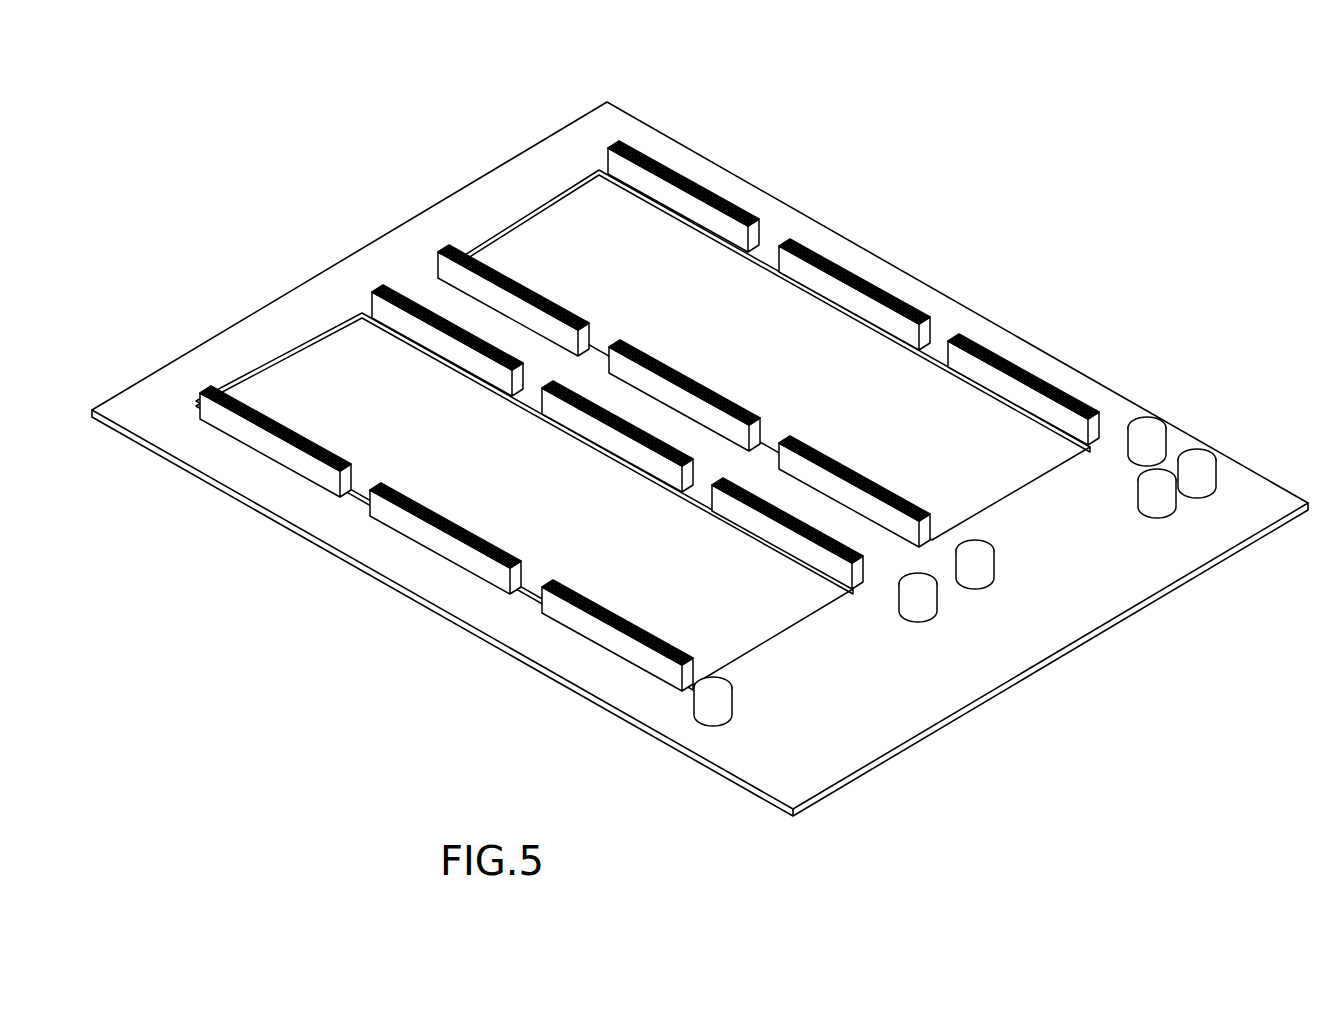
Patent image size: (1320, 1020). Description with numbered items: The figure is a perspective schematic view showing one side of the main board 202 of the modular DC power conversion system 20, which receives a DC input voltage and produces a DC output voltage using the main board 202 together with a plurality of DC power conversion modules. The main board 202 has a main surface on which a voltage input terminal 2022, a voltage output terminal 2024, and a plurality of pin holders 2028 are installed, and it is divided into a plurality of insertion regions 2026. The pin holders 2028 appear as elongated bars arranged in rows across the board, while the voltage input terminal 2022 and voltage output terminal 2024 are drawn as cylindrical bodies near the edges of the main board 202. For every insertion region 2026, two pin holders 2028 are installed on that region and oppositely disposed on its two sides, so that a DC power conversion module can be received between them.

The modular DC power conversion system 20 is at (701, 444).
The main board 202 is at (390, 252).
The voltage input terminal 2022 is at (1150, 427).
The voltage output terminal 2024 is at (1200, 454).
The insertion region 2026 is at (552, 217).
The pin holder 2028 is at (377, 303).